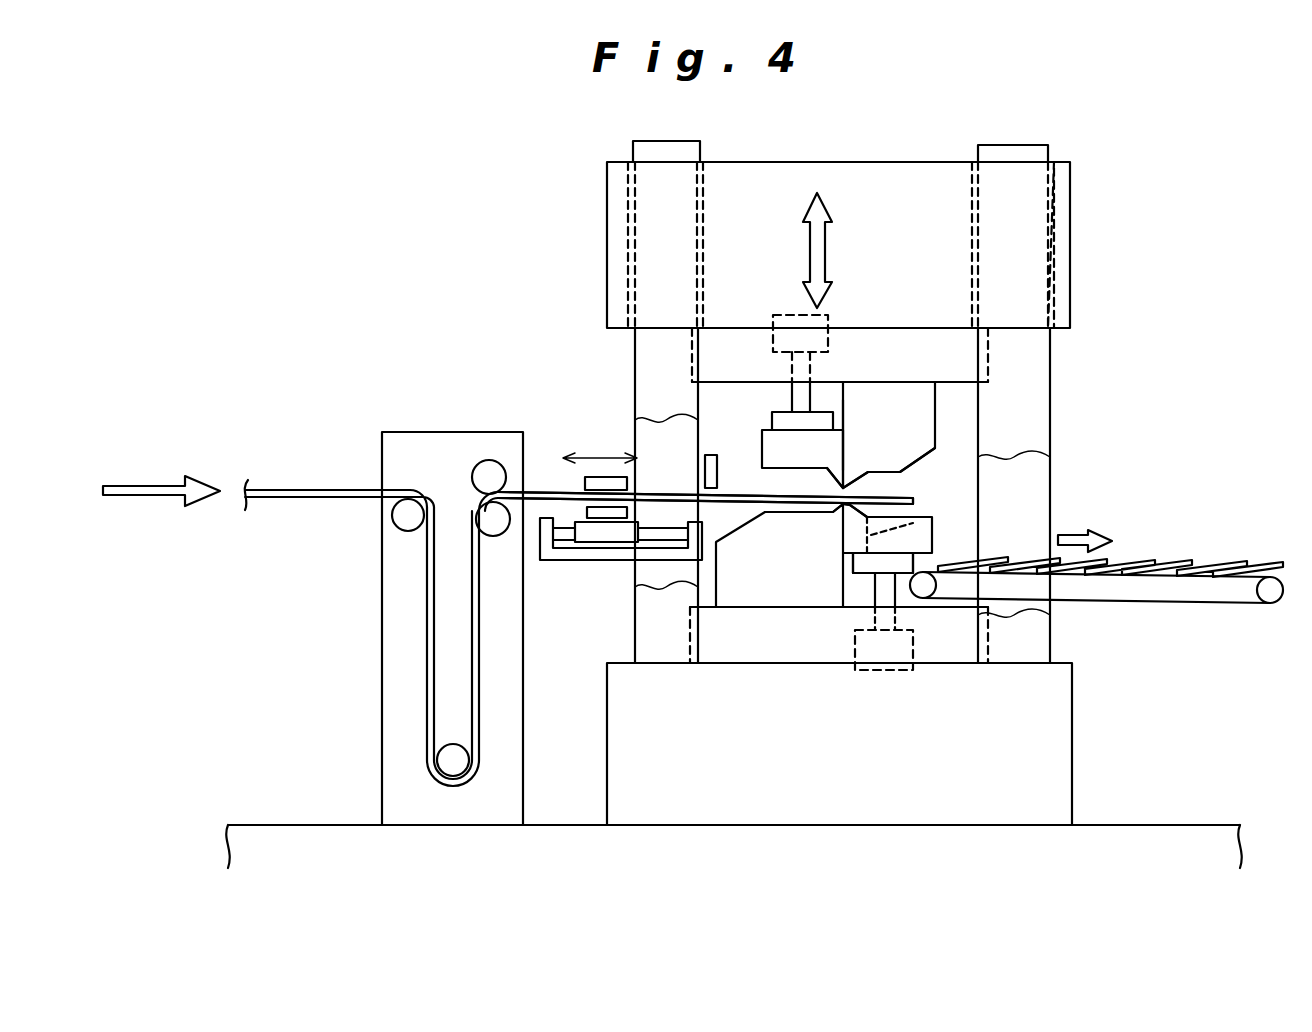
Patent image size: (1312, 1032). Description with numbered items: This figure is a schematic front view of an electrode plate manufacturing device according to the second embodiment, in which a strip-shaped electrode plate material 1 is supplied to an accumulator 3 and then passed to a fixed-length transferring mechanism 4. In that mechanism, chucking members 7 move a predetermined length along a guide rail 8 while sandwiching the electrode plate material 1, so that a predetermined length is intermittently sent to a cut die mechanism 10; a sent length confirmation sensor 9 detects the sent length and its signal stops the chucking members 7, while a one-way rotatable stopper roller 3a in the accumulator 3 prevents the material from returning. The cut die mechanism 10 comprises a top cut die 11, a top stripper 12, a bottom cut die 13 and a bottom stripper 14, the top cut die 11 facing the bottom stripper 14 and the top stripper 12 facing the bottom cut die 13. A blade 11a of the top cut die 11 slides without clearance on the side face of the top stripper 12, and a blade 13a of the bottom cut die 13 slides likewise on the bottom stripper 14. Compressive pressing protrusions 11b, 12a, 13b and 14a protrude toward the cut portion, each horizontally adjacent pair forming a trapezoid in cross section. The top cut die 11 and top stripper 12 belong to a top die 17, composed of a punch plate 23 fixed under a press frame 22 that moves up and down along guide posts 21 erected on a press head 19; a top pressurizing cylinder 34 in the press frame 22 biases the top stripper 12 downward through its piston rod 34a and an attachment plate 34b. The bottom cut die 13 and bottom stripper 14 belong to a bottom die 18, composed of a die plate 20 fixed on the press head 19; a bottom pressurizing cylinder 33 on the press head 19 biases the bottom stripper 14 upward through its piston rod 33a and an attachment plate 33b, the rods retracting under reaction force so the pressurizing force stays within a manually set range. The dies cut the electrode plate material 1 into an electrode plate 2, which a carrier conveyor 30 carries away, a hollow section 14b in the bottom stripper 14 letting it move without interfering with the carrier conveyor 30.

The electrode plate material 1 is at (322, 488).
The electrode plate 2 is at (1037, 558).
The accumulator 3 is at (453, 432).
The one-way rotatable stopper roller 3a is at (489, 478).
The fixed-length transferring mechanism 4 is at (590, 577).
The chucking members 7 is at (587, 518).
The guide rail 8 is at (675, 530).
The sent length confirmation sensor 9 is at (705, 472).
The cut die mechanism 10 is at (934, 492).
The top cut die 11 is at (887, 447).
The blade 11a is at (845, 458).
The compressive pressing protrusion 11b is at (902, 470).
The top stripper 12 is at (800, 452).
The compressive pressing protrusion 12a is at (820, 487).
The bottom cut die 13 is at (836, 514).
The blade 13a is at (856, 524).
The compressive pressing protrusion 13b is at (837, 512).
The bottom stripper 14 is at (910, 537).
The compressive pressing protrusion 14a is at (840, 520).
The hollow section 14b is at (900, 502).
The top die 17 is at (1090, 278).
The bottom die 18 is at (1091, 721).
The press head 19 is at (1048, 778).
The die plate 20 is at (953, 628).
The guide posts 21 is at (648, 357).
The press frame 22 is at (1060, 203).
The punch plate 23 is at (892, 352).
The carrier conveyor 30 is at (1118, 603).
The bottom pressurizing cylinder 33 is at (881, 670).
The piston rod 33a is at (885, 583).
The attachment plate 33b is at (903, 570).
The top pressurizing cylinder 34 is at (790, 315).
The piston rod 34a is at (807, 398).
The attachment plate 34b is at (783, 420).